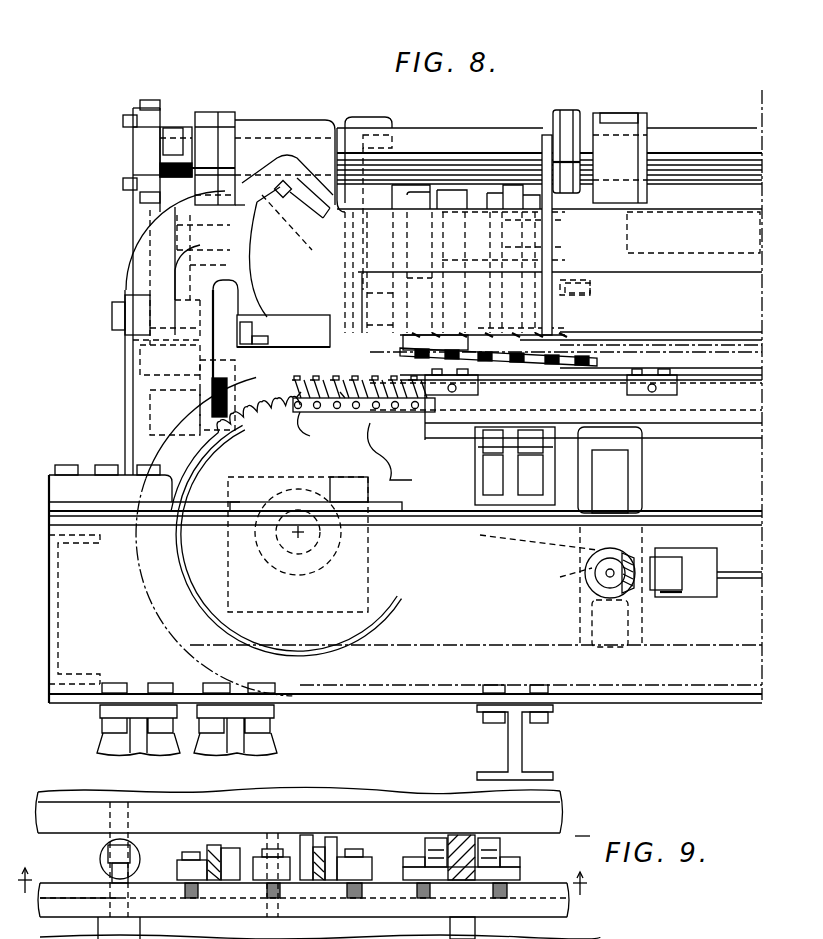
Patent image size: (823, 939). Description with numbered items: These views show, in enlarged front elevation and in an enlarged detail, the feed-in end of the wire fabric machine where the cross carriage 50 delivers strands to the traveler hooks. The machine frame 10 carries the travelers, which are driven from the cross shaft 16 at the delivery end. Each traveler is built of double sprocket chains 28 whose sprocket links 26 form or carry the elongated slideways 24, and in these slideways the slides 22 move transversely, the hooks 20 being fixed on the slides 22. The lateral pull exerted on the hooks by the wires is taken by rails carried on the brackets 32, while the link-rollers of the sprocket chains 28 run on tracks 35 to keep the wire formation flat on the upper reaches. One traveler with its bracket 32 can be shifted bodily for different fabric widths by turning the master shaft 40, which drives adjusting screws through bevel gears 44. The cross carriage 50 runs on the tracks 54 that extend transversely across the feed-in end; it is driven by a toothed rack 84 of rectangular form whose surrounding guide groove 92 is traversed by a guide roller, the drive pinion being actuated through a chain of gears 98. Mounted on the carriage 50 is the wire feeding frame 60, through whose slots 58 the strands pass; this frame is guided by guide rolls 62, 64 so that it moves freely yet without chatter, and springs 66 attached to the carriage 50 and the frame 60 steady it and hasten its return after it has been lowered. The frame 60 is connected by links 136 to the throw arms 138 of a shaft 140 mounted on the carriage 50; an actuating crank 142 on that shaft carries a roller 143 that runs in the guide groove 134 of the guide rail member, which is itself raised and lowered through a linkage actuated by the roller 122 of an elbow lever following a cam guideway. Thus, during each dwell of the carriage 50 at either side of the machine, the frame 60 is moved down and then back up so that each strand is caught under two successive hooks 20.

In FIG. 8, the guide groove 134 is at (170, 125).
In FIG. 8, the roller 143 is at (172, 135).
In FIG. 8, the actuating crank 142 is at (212, 112).
In FIG. 8, the guide groove 92 is at (380, 118).
In FIG. 8, the toothed rack 84 is at (418, 178).
In FIG. 8, the links 136 is at (545, 135).
In FIG. 9, the links 136 is at (487, 850).
In FIG. 8, the throw arms 138 is at (562, 115).
In FIG. 8, the shaft 140 is at (712, 135).
In FIG. 8, the chain of gears 98 is at (592, 290).
In FIG. 8, the tracks 54 is at (290, 275).
In FIG. 8, the slots 58 is at (575, 356).
In FIG. 8, the wire feeding frame 60 is at (618, 342).
In FIG. 9, the wire feeding frame 60 is at (397, 898).
In FIG. 8, the slideways 24 is at (300, 392).
In FIG. 8, the hooks 20 is at (318, 380).
In FIG. 8, the slides 22 is at (342, 390).
In FIG. 8, the sprocket links 26 is at (313, 431).
In FIG. 8, the sprocket chains 28 is at (390, 416).
In FIG. 8, the roller 122 is at (228, 395).
In FIG. 8, the brackets 32 is at (470, 392).
In FIG. 8, the tracks 35 is at (655, 410).
In FIG. 8, the cross shaft 16 is at (336, 568).
In FIG. 8, the bevel gears 44 is at (632, 592).
In FIG. 8, the master shaft 40 is at (744, 580).
In FIG. 9, the cross carriage 50 is at (407, 792).
In FIG. 9, the guide rolls 62 is at (228, 848).
In FIG. 9, the guide rolls 64 is at (280, 857).
In FIG. 9, the springs 66 is at (100, 857).
In FIG. 9, the frame 10 is at (312, 875).